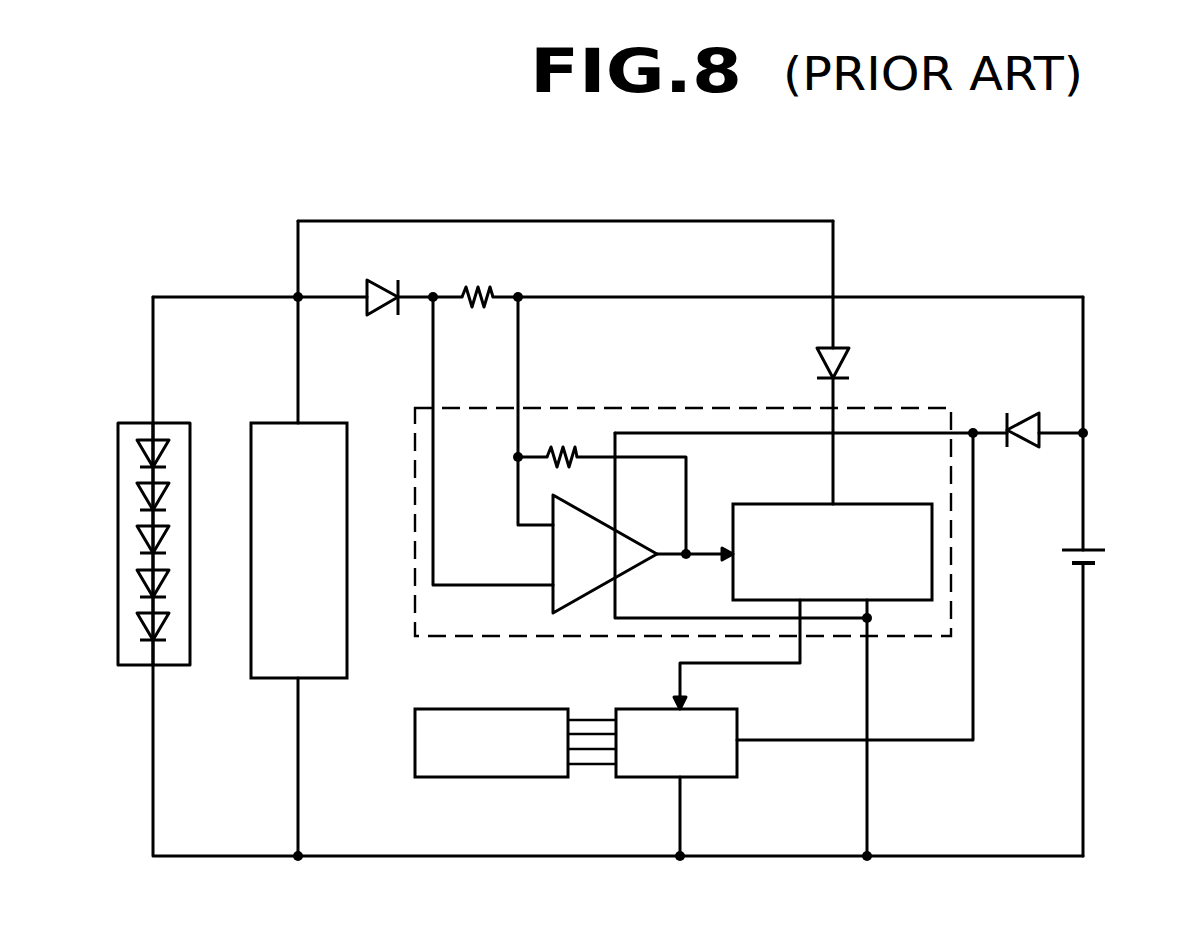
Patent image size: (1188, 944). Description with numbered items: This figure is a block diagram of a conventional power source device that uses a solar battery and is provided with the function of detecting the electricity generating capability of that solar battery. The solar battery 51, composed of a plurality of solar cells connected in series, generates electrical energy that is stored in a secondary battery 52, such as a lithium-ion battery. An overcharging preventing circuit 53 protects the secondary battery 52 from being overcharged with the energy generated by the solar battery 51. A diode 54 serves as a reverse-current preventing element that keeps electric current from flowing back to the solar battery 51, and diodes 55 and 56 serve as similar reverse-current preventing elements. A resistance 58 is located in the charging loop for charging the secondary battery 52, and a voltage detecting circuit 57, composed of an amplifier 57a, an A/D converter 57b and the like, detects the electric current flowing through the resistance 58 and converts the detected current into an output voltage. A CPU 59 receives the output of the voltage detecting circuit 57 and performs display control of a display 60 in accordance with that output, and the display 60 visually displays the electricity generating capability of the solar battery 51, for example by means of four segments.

The solar battery 51 is at (137, 423).
The secondary battery 52 is at (1102, 557).
The overcharging preventing circuit 53 is at (279, 423).
The diode 54 is at (382, 281).
The diode 55 is at (818, 366).
The diode 56 is at (1022, 413).
The voltage detecting circuit 57 is at (683, 481).
The amplifier 57a is at (553, 597).
The A/D converter 57b is at (873, 504).
The resistance 58 is at (473, 286).
The CPU 59 is at (636, 777).
The display 60 is at (461, 777).